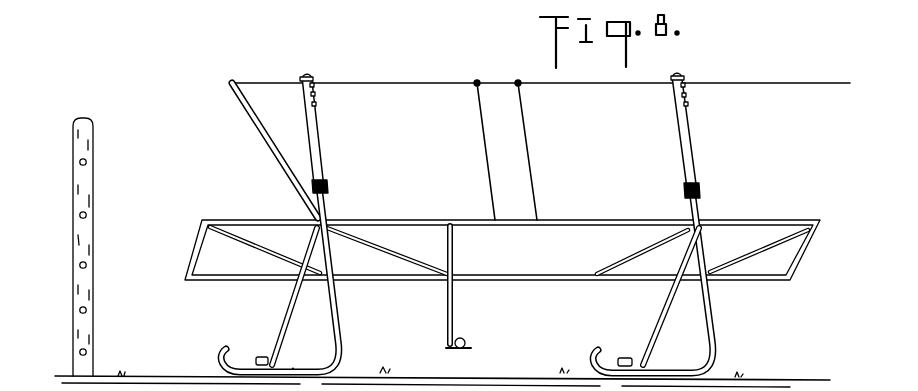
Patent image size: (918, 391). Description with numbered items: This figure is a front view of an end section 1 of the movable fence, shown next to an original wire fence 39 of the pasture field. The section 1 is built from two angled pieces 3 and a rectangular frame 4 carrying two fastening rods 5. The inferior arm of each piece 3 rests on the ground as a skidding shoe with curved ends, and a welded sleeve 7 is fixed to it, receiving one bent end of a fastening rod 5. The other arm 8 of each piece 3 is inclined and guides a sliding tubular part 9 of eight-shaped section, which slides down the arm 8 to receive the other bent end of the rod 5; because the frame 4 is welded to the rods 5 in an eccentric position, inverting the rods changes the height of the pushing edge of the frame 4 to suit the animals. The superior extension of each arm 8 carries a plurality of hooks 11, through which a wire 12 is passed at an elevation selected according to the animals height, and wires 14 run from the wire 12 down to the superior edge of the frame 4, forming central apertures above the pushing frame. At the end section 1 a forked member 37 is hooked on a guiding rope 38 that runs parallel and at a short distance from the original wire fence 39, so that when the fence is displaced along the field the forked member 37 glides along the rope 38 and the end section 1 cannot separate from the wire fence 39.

The section 1 is at (504, 224).
The piece 3 is at (360, 321).
The rectangular frame 4 is at (207, 288).
The fastening rod 5 is at (292, 305).
The welded sleeve 7 is at (262, 356).
The arm 8 is at (689, 143).
The sliding tubular part 9 is at (331, 187).
The hook 11 is at (315, 85).
The wire 12 is at (420, 88).
The wire 14 is at (500, 163).
The forked member 37 is at (447, 346).
The guiding rope 38 is at (467, 338).
The original wire fence 39 is at (92, 172).